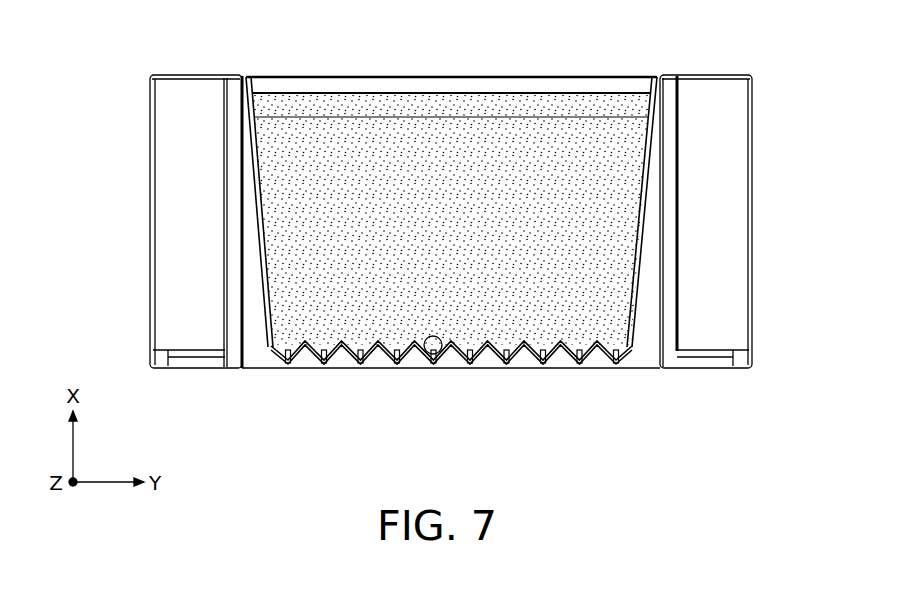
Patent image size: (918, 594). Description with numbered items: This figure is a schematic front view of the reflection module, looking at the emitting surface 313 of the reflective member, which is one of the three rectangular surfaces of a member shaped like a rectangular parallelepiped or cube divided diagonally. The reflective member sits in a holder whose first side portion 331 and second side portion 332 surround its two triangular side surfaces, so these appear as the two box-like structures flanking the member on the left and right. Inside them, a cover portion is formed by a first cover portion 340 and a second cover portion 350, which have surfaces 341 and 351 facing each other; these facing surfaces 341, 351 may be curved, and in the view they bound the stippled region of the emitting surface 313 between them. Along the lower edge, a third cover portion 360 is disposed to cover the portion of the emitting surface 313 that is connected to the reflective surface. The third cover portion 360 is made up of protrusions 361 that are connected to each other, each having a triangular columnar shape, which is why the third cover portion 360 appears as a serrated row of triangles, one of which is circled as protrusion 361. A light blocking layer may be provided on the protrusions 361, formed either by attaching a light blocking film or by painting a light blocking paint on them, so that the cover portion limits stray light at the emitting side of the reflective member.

The emitting surface 313 is at (453, 145).
The first side portion 331 is at (176, 188).
The second side portion 332 is at (726, 188).
The first cover portion 340 is at (197, 179).
The surface 341 is at (276, 172).
The second cover portion 350 is at (702, 179).
The surface 351 is at (645, 175).
The third cover portion 360 is at (522, 364).
The protrusions 361 is at (442, 352).